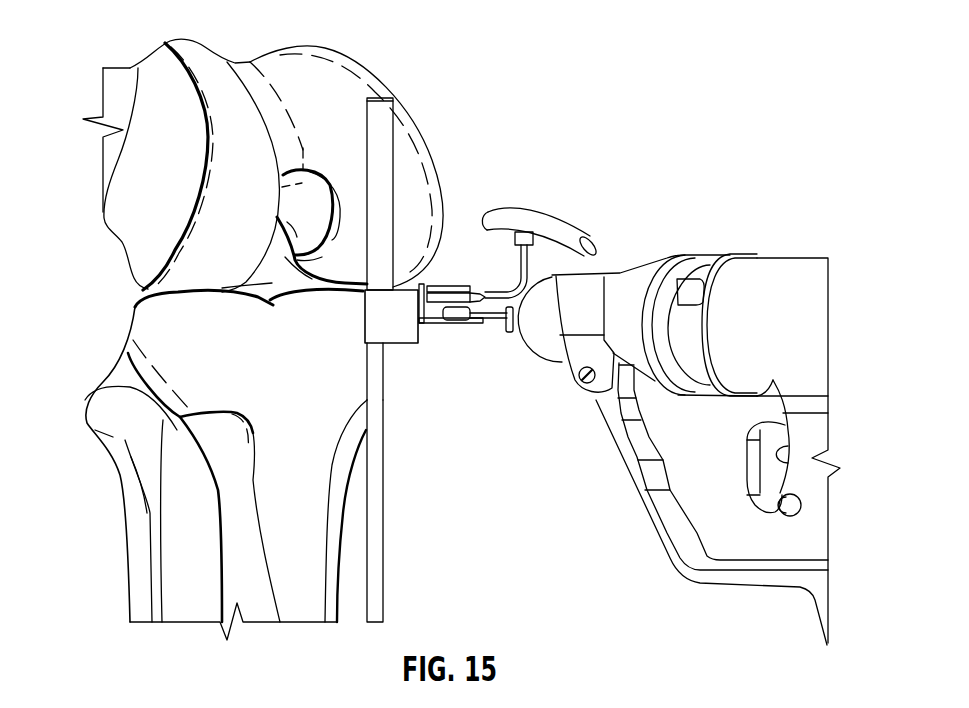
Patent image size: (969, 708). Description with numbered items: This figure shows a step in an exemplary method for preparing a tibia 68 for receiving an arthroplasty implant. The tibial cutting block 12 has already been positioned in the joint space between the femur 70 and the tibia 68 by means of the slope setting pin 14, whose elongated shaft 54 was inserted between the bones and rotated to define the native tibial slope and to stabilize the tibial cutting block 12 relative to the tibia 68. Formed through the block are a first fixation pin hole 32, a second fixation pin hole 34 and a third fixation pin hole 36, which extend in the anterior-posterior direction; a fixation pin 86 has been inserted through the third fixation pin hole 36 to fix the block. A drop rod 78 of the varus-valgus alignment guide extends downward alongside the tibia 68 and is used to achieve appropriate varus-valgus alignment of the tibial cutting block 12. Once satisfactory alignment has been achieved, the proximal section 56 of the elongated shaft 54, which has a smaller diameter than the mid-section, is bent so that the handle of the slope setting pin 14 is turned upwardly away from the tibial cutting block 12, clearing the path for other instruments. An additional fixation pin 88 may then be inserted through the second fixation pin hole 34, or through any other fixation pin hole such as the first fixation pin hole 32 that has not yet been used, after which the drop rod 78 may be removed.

The tibial cutting block 12 is at (378, 323).
The slope setting pin 14 is at (513, 281).
The first fixation pin hole 32 is at (460, 310).
The second fixation pin hole 34 is at (443, 308).
The third fixation pin hole 36 is at (370, 357).
The elongated shaft 54 is at (517, 263).
The proximal section 56 is at (557, 282).
The tibia 68 is at (286, 391).
The femur 70 is at (263, 83).
The drop rod 78 is at (373, 543).
The fixation pin 86 is at (430, 318).
The additional fixation pin 88 is at (490, 320).